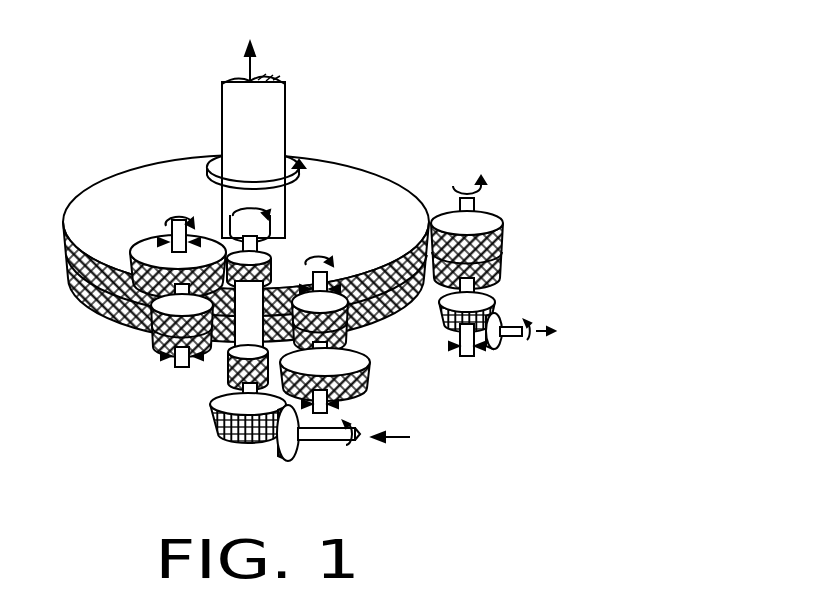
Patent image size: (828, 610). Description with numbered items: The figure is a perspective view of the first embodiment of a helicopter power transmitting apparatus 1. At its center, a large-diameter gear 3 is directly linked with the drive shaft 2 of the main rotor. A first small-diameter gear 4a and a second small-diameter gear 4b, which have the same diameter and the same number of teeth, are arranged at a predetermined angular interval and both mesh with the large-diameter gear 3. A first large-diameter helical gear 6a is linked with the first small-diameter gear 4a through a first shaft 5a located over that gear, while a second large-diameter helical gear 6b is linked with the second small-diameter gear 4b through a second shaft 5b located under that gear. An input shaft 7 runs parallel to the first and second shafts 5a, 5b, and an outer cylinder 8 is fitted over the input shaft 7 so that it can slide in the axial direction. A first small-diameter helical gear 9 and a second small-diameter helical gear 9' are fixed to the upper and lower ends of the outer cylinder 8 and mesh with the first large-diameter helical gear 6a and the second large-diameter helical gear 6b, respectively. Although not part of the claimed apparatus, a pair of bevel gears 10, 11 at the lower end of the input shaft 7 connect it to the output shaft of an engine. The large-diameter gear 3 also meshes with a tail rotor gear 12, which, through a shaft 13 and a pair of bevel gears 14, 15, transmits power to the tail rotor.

The helicopter power transmitting apparatus 1 is at (462, 90).
The drive shaft 2 is at (286, 118).
The large-diameter gear 3 is at (351, 193).
The first small-diameter gear 4a is at (150, 358).
The second small-diameter gear 4b is at (352, 338).
The first shaft 5a is at (121, 328).
The second shaft 5b is at (364, 360).
The first large-diameter helical gear 6a is at (147, 252).
The second large-diameter helical gear 6b is at (363, 388).
The input shaft 7 is at (236, 410).
The outer cylinder 8 is at (306, 257).
The first small-diameter helical gear 9 is at (277, 277).
The second small-diameter helical gear 9' is at (200, 380).
The bevel gear 10 is at (224, 433).
The bevel gear 11 is at (275, 453).
The tail rotor gear 12 is at (490, 218).
The shaft 13 is at (487, 298).
The bevel gear 14 is at (463, 350).
The bevel gear 15 is at (500, 350).